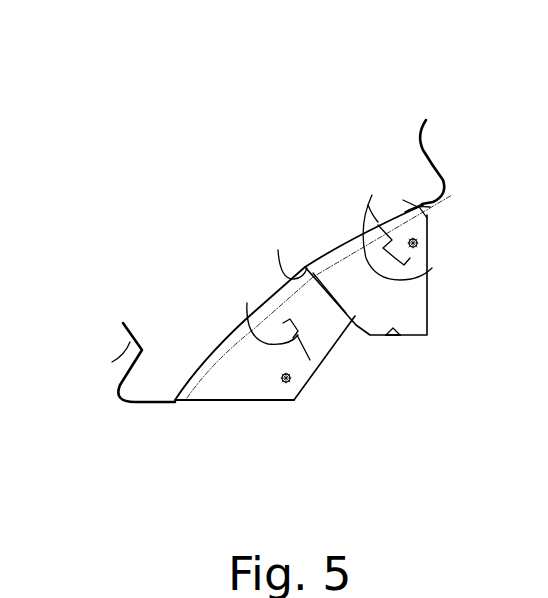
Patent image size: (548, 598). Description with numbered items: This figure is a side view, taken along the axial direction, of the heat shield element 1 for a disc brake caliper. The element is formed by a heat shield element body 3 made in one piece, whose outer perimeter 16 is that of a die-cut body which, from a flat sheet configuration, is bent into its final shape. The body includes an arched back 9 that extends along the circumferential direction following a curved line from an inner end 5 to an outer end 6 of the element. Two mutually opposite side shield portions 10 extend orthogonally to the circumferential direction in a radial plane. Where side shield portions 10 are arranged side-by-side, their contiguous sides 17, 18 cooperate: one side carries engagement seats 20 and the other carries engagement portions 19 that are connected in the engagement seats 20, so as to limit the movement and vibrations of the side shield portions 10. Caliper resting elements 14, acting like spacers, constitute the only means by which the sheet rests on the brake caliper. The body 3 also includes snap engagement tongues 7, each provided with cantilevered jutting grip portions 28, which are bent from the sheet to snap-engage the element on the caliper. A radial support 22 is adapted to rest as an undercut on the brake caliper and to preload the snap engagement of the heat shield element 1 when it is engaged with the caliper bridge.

The heat shield element 1 is at (315, 145).
The heat shield element body 3 is at (427, 218).
The inner end 5 is at (432, 208).
The outer end 6 is at (176, 402).
The snap engagement tongues 7 is at (112, 362).
The arched back 9 is at (251, 293).
The side shield portions 10 is at (420, 268).
The caliper resting elements 14 is at (422, 200).
The outer perimeter 16 is at (230, 402).
The contiguous side 17 is at (305, 267).
The contiguous side 18 is at (223, 357).
The engagement portions 19 is at (410, 272).
The engagement seats 20 is at (368, 225).
The radial support 22 is at (412, 336).
The cantilevered jutting grip portions 28 is at (137, 332).